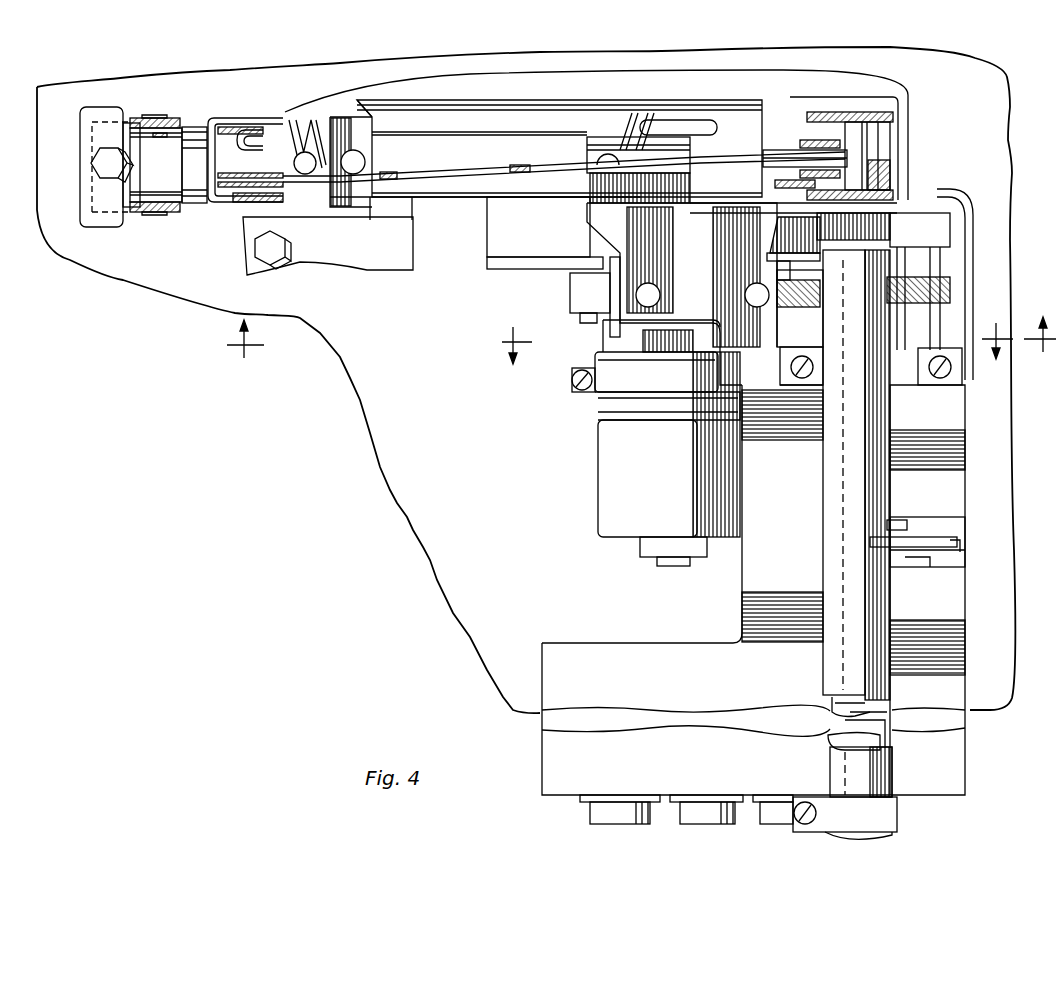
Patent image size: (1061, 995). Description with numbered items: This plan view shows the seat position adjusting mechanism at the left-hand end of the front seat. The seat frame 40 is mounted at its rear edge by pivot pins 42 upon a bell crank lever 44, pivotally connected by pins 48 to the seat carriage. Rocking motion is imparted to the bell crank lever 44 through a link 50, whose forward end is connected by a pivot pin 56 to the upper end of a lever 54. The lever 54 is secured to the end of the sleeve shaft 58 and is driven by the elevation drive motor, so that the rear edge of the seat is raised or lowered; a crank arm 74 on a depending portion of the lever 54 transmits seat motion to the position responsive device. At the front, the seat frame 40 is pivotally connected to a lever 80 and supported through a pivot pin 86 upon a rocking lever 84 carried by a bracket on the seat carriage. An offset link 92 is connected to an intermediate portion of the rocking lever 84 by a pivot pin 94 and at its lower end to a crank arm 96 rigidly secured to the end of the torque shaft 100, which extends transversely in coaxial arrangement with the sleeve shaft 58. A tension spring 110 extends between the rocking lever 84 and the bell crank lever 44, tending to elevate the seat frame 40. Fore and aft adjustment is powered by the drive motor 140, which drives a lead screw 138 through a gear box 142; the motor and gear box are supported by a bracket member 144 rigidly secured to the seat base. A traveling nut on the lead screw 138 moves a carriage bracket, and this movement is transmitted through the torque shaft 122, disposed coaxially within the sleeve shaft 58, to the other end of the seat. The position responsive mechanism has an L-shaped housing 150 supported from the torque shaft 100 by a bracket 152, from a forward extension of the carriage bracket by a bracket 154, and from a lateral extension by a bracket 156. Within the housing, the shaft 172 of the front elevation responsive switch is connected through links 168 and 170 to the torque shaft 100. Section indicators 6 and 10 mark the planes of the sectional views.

The seat frame 40 is at (92, 112).
The pivot pins 42 is at (148, 117).
The bell crank lever 44 is at (198, 200).
The pins 48 is at (245, 118).
The tension spring 110 is at (318, 125).
The link 50 is at (440, 172).
The rocking lever 84 is at (735, 125).
The pivot pin 86 is at (816, 113).
The lever 80 is at (865, 138).
The lever 54 is at (890, 182).
The pivot pin 56 is at (835, 148).
The crank arm 74 is at (918, 236).
The offset link 92 is at (775, 228).
The crank arm 96 is at (776, 255).
The pivot pin 94 is at (780, 252).
The lead screw 138 is at (788, 308).
The bracket 156 is at (810, 378).
The bracket 154 is at (952, 378).
The torque sleeve shaft 100 is at (837, 655).
The sleeve shaft 58 is at (838, 748).
The torque shaft 122 is at (882, 732).
The bracket 152 is at (900, 818).
The housing 150 is at (560, 747).
The shaft 172 is at (893, 520).
The link 168 is at (917, 545).
The link 170 is at (915, 552).
The bracket member 144 is at (507, 262).
The gear box 142 is at (612, 332).
The fore and aft drive motor 140 is at (603, 480).
The section line 6- 6 is at (638, 337).
The section line 10- 10 is at (757, 361).